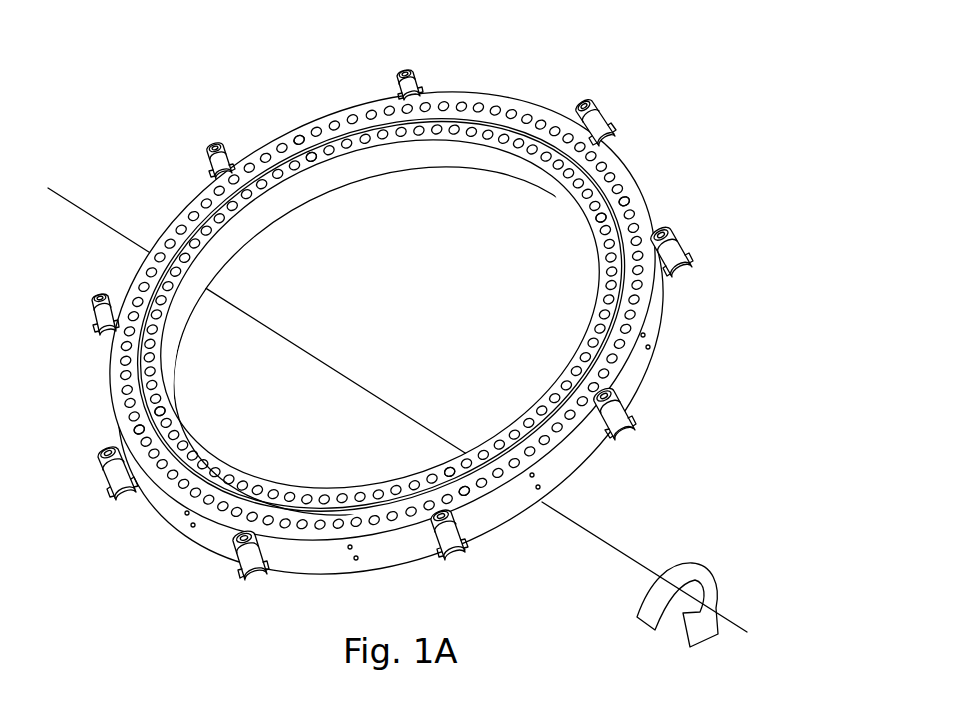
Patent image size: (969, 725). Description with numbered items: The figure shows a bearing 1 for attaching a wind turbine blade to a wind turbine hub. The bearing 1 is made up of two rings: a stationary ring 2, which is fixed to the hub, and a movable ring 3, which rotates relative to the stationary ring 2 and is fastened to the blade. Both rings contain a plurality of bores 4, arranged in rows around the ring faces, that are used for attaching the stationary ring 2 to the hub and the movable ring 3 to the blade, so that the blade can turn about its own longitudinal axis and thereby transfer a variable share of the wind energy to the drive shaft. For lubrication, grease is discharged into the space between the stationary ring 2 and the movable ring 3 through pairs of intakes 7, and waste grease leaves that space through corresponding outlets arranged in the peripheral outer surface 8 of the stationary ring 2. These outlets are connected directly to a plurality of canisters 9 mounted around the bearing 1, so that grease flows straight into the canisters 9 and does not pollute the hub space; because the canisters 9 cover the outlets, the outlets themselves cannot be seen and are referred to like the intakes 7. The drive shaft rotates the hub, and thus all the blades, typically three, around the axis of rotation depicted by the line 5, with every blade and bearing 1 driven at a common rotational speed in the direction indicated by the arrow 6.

The bearing 1 is at (387, 333).
The stationary ring 2 is at (643, 357).
The movable ring 3 is at (295, 205).
The bores 4 is at (633, 292).
The line 5 is at (397, 410).
The arrow 6 is at (677, 593).
The intakes 7 is at (534, 475).
The peripheral outer surface 8 is at (298, 558).
The canisters 9 is at (113, 480).